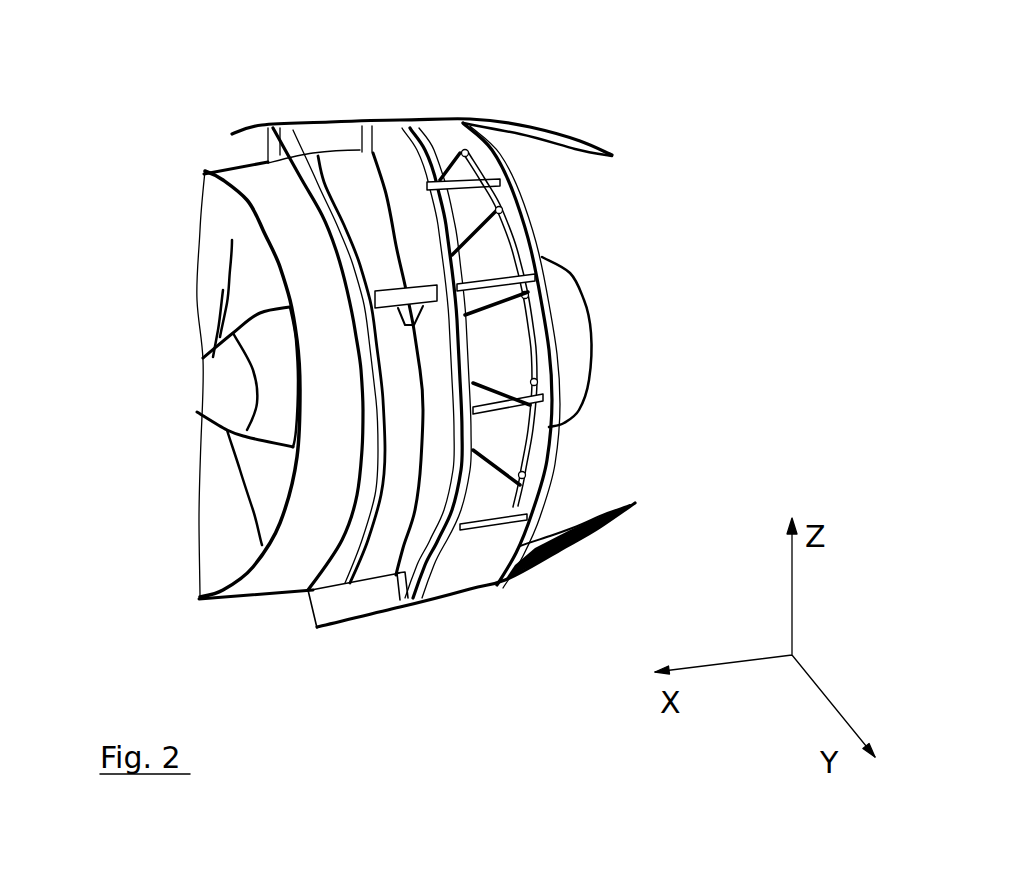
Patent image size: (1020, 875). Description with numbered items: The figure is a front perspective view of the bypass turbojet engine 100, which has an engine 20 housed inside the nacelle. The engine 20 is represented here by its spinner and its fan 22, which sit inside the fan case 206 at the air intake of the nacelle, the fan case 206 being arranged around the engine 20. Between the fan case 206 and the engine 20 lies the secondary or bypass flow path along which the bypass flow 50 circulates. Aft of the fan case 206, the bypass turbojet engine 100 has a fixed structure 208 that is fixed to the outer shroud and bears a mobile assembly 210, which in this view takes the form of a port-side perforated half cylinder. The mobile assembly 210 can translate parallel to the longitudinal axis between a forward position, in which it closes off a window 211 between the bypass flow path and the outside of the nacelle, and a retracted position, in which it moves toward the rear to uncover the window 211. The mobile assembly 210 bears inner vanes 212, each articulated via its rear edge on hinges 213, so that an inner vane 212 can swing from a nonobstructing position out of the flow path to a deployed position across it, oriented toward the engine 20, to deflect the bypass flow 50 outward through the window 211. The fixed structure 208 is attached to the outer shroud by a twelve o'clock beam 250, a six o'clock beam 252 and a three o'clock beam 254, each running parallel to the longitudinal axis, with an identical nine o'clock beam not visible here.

The bypass turbojet engine 100 is at (707, 137).
The engine 20 is at (237, 400).
The fan 22 is at (250, 283).
The secondary or bypass flow 50 is at (480, 425).
The fan case 206 is at (222, 180).
The fixed structure 208 is at (283, 145).
The 12-o'clock beam 250 is at (325, 148).
The mobile assembly 210 is at (430, 132).
The window 211 is at (507, 340).
The inner vane 212 is at (500, 257).
The hinges 213 is at (498, 212).
The 6-o'clock beam 252 is at (372, 595).
The 3-o'clock beam 254 is at (396, 300).